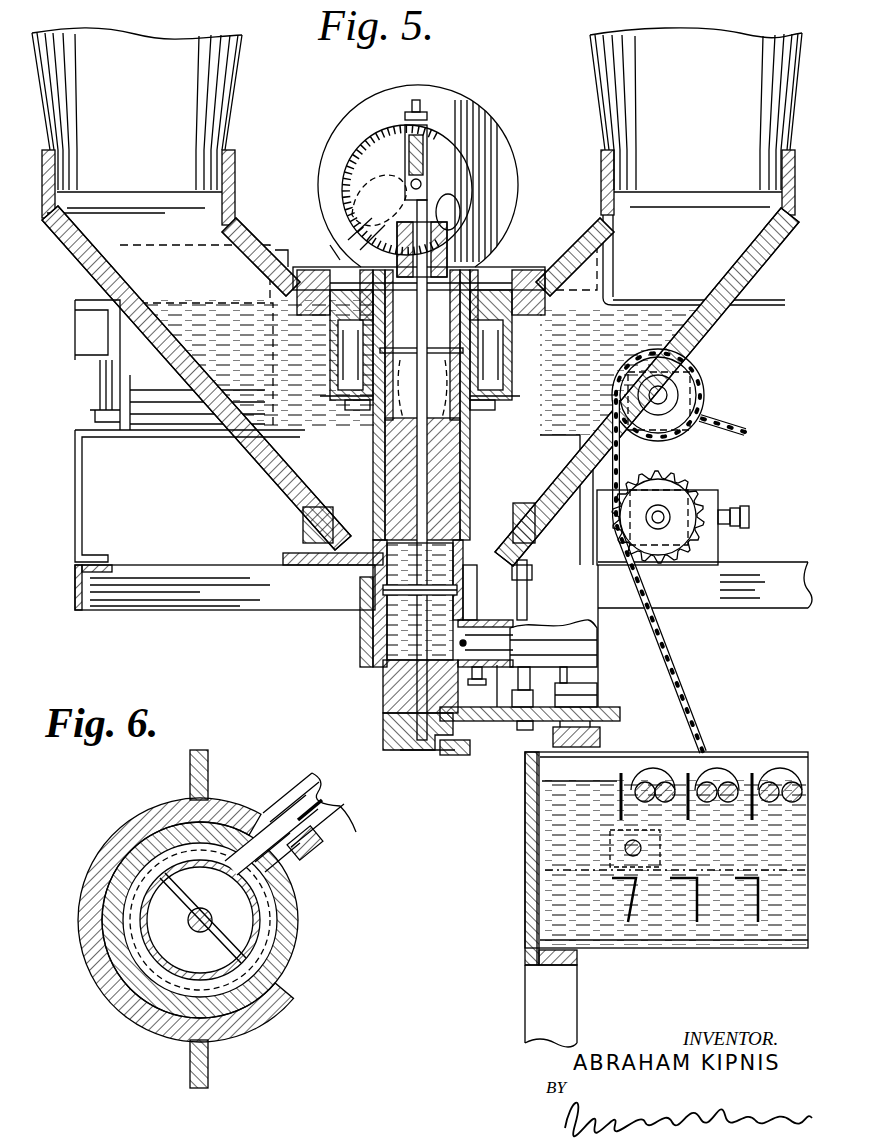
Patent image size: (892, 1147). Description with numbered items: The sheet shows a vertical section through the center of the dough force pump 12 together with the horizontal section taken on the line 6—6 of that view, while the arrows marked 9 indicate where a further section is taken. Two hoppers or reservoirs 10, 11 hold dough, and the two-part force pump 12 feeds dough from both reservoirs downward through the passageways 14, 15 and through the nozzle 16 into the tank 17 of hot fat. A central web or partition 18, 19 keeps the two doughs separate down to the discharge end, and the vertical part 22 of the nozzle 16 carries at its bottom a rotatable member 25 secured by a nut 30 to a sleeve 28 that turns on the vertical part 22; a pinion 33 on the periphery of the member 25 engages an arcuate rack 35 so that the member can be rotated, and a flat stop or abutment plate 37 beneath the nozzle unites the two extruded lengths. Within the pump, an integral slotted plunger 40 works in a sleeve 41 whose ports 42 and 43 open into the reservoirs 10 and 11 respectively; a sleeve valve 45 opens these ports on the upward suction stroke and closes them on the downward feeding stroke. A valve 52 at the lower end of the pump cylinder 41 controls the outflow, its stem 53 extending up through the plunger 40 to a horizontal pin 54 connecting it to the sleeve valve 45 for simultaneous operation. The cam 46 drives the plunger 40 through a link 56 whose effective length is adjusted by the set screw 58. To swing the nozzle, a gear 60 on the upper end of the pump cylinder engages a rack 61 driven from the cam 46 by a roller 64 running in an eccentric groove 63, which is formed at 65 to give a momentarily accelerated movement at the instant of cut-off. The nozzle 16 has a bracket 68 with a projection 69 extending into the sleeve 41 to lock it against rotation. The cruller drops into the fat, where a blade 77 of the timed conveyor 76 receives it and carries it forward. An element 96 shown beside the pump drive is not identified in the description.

In FIG. 5, the section line 6- 6 is at (340, 572).
In FIG. 5, the housing 9 is at (285, 258).
In FIG. 5, the hopper 10 is at (215, 352).
In FIG. 5, the hopper 11 is at (712, 270).
In FIG. 5, the two-part force pump 12 is at (299, 142).
In FIG. 5, the passageway 14 is at (400, 603).
In FIG. 5, the passageway 15 is at (418, 612).
In FIG. 5, the nozzle 16 is at (497, 665).
In FIG. 6, the nozzle 16 is at (298, 788).
In FIG. 5, the tank 17 is at (528, 810).
In FIG. 5, the central web 18 is at (395, 605).
In FIG. 6, the central web 18 is at (112, 944).
In FIG. 5, the central partition 19 is at (597, 630).
In FIG. 5, the vertical part of the discharge nozzle 22 is at (584, 670).
In FIG. 5, the rotatable nozzle member 25 is at (553, 752).
In FIG. 5, the sleeve 28 is at (523, 731).
In FIG. 5, the nut 30 is at (604, 733).
In FIG. 5, the pinion 33 is at (600, 700).
In FIG. 5, the arcuate rack 35 is at (606, 714).
In FIG. 5, the abutment plate 37 is at (618, 747).
In FIG. 5, the plunger 40 is at (393, 463).
In FIG. 5, the sleeve 41 is at (380, 441).
In FIG. 6, the sleeve 41 is at (262, 948).
In FIG. 5, the port 42 is at (301, 527).
In FIG. 5, the port 43 is at (460, 470).
In FIG. 5, the sleeve valve 45 is at (392, 485).
In FIG. 5, the cam 46 is at (388, 118).
In FIG. 5, the valve 52 is at (362, 600).
In FIG. 5, the valve stem 53 is at (430, 422).
In FIG. 5, the horizontal pin 54 is at (486, 334).
In FIG. 5, the link 56 is at (385, 205).
In FIG. 5, the set screw 58 is at (426, 113).
In FIG. 5, the gear 60 is at (462, 250).
In FIG. 5, the rack 61 is at (520, 254).
In FIG. 5, the eccentric cam groove 63 is at (346, 148).
In FIG. 5, the roller 64 is at (433, 182).
In FIG. 5, the accelerated portion of cam groove 65 is at (322, 174).
In FIG. 5, the bracket 68 is at (522, 552).
In FIG. 6, the bracket 68 is at (325, 850).
In FIG. 5, the projection 69 is at (527, 505).
In FIG. 6, the projection 69 is at (262, 915).
In FIG. 5, the conveyor 76 is at (598, 868).
In FIG. 5, the blade 77 is at (748, 775).
In FIG. 5, the sprocket 96 is at (728, 490).